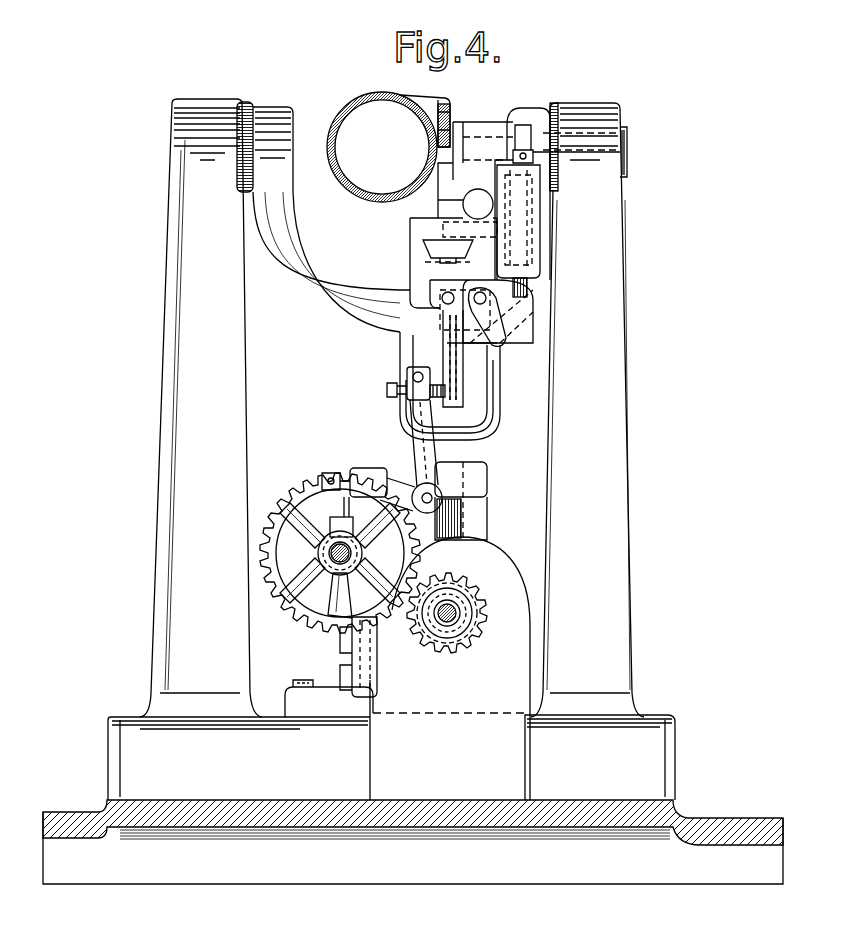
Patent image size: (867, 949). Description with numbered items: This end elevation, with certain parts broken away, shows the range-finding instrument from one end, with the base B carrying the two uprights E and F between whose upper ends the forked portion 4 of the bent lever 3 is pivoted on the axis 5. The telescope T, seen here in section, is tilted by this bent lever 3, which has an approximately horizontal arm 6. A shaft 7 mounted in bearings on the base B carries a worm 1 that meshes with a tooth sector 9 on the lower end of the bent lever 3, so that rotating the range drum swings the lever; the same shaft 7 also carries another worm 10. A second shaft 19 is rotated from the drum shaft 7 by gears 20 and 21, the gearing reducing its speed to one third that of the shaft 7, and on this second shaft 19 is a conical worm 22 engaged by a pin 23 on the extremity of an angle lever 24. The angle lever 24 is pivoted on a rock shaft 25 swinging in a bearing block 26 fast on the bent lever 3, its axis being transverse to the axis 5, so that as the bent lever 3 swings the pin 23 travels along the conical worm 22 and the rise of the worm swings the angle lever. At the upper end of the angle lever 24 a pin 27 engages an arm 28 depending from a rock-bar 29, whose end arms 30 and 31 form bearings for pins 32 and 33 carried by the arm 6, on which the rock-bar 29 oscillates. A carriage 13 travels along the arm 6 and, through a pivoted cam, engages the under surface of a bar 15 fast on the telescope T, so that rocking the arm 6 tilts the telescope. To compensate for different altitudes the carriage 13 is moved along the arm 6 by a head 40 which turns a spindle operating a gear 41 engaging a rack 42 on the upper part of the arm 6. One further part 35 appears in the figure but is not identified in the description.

The worm 1 is at (468, 607).
The bent lever 3 is at (447, 523).
The forked portion 4 is at (350, 313).
The axis 5 is at (628, 143).
The horizontal arm 6 is at (418, 247).
The shaft 7 is at (463, 600).
The tooth sector 9 is at (475, 540).
The worm 10 is at (449, 628).
The carriage 13 is at (462, 205).
The bar 15 is at (528, 296).
The second shaft 19 is at (343, 565).
The gear 20 is at (272, 521).
The gear 21 is at (473, 634).
The conical worm 22 is at (321, 517).
The pin 23 is at (362, 507).
The angle lever 24 is at (410, 470).
The rock shaft 25 is at (424, 492).
The bearing block 26 is at (477, 470).
The pin 27 is at (408, 398).
The arm 28 is at (457, 393).
The rock-bar 29 is at (533, 325).
The arm 30 is at (505, 342).
The arm 31 is at (460, 333).
The pin 32 is at (444, 302).
The pin 33 is at (485, 306).
The cylinder housing 35 is at (538, 253).
The head 40 is at (537, 243).
The gear 41 is at (412, 232).
The rack 42 is at (430, 243).
The telescope T is at (360, 110).
The upright E is at (201, 408).
The upright F is at (587, 410).
The base B is at (413, 842).